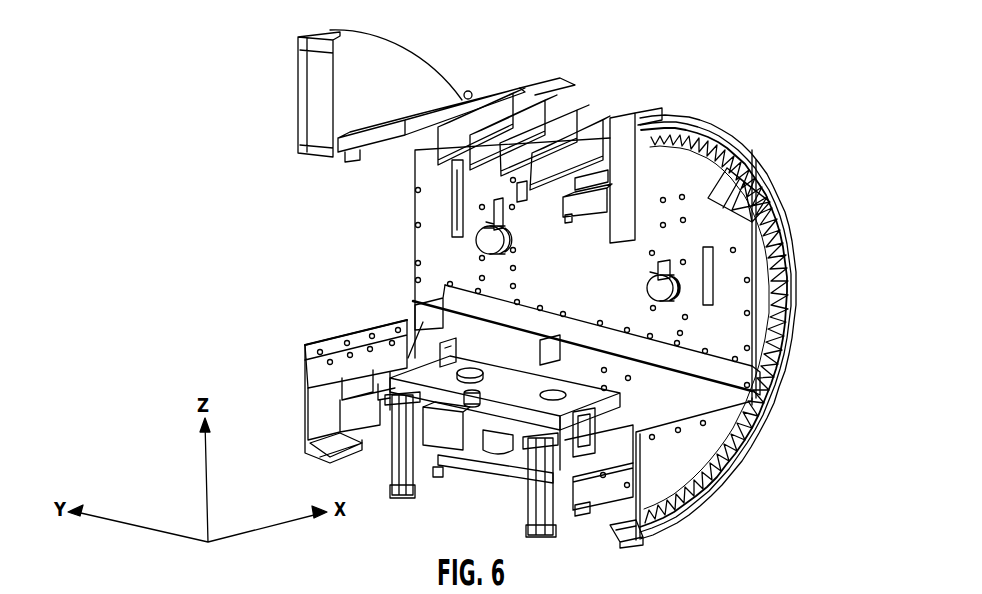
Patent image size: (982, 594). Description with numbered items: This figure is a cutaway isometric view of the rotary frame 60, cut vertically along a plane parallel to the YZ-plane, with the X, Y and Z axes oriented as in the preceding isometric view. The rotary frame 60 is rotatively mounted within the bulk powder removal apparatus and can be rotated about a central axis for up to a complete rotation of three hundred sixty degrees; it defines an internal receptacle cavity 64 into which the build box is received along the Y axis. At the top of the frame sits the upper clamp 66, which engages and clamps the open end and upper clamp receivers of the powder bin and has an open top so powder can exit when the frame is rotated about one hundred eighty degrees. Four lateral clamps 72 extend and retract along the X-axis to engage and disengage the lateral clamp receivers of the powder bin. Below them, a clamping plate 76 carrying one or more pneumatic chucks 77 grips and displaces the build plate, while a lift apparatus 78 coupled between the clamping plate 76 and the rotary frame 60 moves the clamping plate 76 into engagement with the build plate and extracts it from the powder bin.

The rotary frame 60 is at (666, 100).
The upper clamp 66 is at (362, 138).
The lateral clamps 72 is at (486, 240).
The internal receptacle cavity 64 is at (683, 353).
The clamping plate 76 is at (375, 406).
The pneumatic chucks 77 is at (462, 368).
The lift apparatus 78 is at (687, 519).